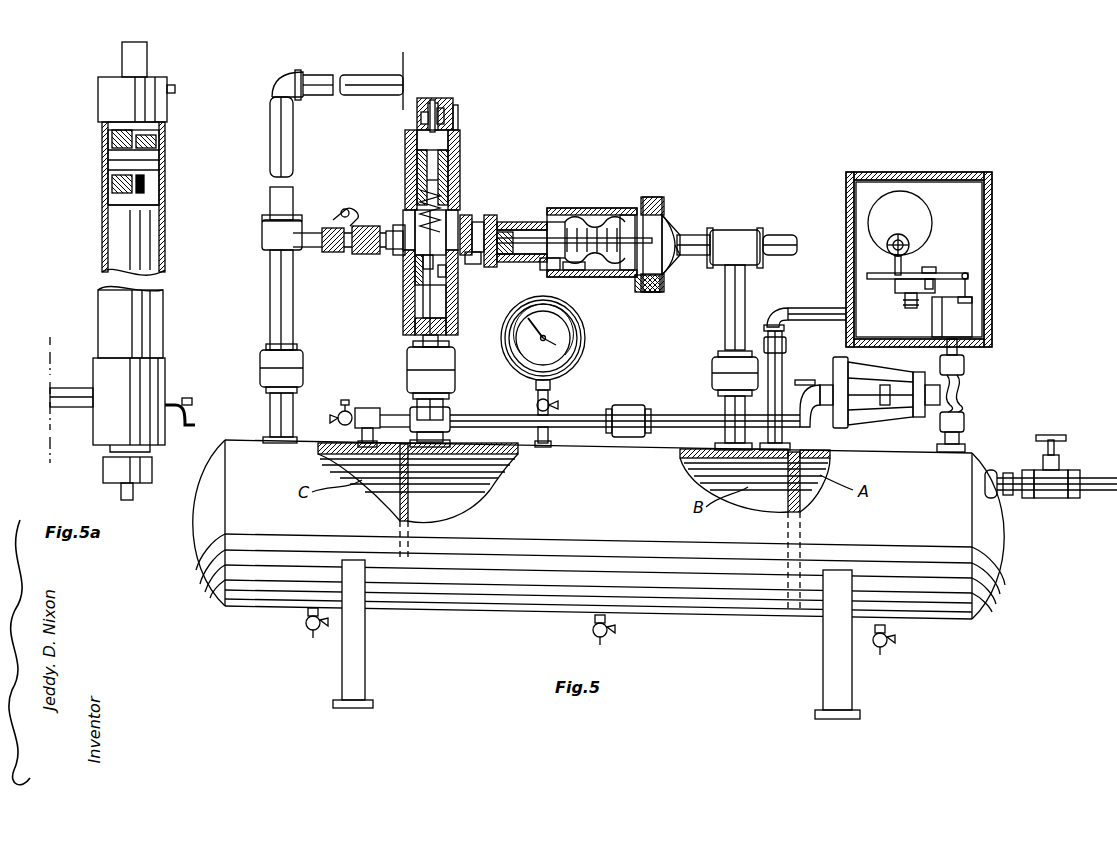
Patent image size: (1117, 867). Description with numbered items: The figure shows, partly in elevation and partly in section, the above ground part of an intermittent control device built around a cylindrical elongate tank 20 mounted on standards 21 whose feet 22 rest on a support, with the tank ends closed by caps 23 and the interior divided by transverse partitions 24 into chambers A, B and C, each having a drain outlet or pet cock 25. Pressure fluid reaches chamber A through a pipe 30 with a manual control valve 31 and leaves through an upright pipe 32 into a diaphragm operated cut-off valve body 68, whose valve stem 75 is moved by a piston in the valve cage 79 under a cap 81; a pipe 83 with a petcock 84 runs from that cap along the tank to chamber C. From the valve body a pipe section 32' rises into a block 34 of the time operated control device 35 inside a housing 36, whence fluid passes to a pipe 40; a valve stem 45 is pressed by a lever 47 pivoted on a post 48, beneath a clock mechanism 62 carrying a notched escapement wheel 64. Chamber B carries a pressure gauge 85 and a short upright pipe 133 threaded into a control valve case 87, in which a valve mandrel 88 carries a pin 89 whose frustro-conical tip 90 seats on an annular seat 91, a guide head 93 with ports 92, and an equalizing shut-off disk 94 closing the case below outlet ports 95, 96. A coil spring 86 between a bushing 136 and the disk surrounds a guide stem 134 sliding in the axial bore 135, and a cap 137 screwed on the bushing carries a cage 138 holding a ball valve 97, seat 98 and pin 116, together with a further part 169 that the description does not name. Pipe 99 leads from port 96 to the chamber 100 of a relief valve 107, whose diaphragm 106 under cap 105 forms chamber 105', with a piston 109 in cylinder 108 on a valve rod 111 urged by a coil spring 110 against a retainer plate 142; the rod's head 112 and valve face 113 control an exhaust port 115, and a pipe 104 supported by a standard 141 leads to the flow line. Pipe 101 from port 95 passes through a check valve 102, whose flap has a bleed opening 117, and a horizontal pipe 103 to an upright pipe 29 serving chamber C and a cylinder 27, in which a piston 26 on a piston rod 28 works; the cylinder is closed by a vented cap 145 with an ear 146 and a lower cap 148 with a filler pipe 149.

In FIG. 5, the tank 20 is at (485, 598).
In FIG. 5, the standards 21 is at (365, 648).
In FIG. 5, the feet 22 is at (373, 705).
In FIG. 5, the caps 23 is at (200, 562).
In FIG. 5, the partitions 24 is at (400, 510).
In FIG. 5, the drain outlet or pet cock 25 is at (305, 632).
In FIG. 5A, the piston 26 is at (120, 165).
In FIG. 5A, the cylinder 27 is at (162, 210).
In FIG. 5A, the piston rod 28 is at (121, 493).
In FIG. 5A, the upright pipe 29 is at (66, 388).
In FIG. 5, the upright pipe 29 is at (380, 78).
In FIG. 5, the pipe 30 is at (1102, 486).
In FIG. 5, the control valve 31 is at (1062, 455).
In FIG. 5, the upright pipe 32 is at (970, 428).
In FIG. 5, the pipe section 32' is at (985, 350).
In FIG. 5, the block 34 is at (960, 312).
In FIG. 5, the time operated mechanism or control device 35 is at (961, 220).
In FIG. 5, the housing 36 is at (846, 196).
In FIG. 5, the pipe 40 is at (815, 312).
In FIG. 5, the valve rod or stem 45 is at (935, 283).
In FIG. 5, the lever 47 is at (868, 279).
In FIG. 5, the post 48 is at (968, 285).
In FIG. 5, the time or clock mechanism 62 is at (922, 216).
In FIG. 5, the escapement wheel 64 is at (905, 238).
In FIG. 5, the cut-off valve body 68 is at (962, 392).
In FIG. 5, the valve stem 75 is at (885, 405).
In FIG. 5, the valve cage 79 is at (885, 368).
In FIG. 5, the cap or head 81 is at (826, 383).
In FIG. 5, the pipe 83 is at (683, 420).
In FIG. 5, the drain or petcock 84 is at (335, 410).
In FIG. 5, the pressure gauge 85 is at (582, 338).
In FIG. 5, the coil spring 86 is at (467, 215).
In FIG. 5, the control valve case 87 is at (403, 303).
In FIG. 5, the valve mandrel 88 is at (445, 270).
In FIG. 5, the stud or pin 89 is at (447, 290).
In FIG. 5, the frustro-conical tip 90 is at (415, 320).
In FIG. 5, the seat 91 is at (458, 315).
In FIG. 5, the ducts or ports 92 is at (415, 280).
In FIG. 5, the guide head or collar 93 is at (472, 262).
In FIG. 5, the shut-off disk 94 is at (395, 250).
In FIG. 5, the outlet port 95 is at (406, 232).
In FIG. 5, the outlet port 96 is at (480, 230).
In FIG. 5, the ball valve 97 is at (421, 118).
In FIG. 5, the seat 98 is at (440, 108).
In FIG. 5, the pipe 99 is at (497, 218).
In FIG. 5, the chamber 100 is at (530, 222).
In FIG. 5, the pipe 101 is at (396, 225).
In FIG. 5, the check valve 102 is at (350, 255).
In FIG. 5, the horizontal pipe 103 is at (300, 225).
In FIG. 5, the pipe 104 is at (712, 233).
In FIG. 5, the cap or head 105 is at (687, 222).
In FIG. 5, the chamber 105' is at (692, 269).
In FIG. 5, the diaphragm 106 is at (652, 197).
In FIG. 5, the relief valve 107 is at (596, 215).
In FIG. 5, the cylinder 108 is at (640, 292).
In FIG. 5, the piston 109 is at (628, 215).
In FIG. 5, the coil spring 110 is at (578, 215).
In FIG. 5, the valve rod 111 is at (572, 270).
In FIG. 5, the head or boss 112 is at (507, 254).
In FIG. 5, the valve face 113 is at (553, 222).
In FIG. 5, the exhaust port 115 is at (548, 270).
In FIG. 5, the pin 116 is at (457, 130).
In FIG. 5, the bleed opening 117 is at (335, 252).
In FIG. 5, the upright pipe 133 is at (408, 365).
In FIG. 5, the guide stem 134 is at (452, 180).
In FIG. 5, the axial bore 135 is at (405, 143).
In FIG. 5, the bushing 136 is at (417, 168).
In FIG. 5, the cap or head 137 is at (462, 140).
In FIG. 5, the cage 138 is at (424, 98).
In FIG. 5, the standard 141 is at (725, 332).
In FIG. 5, the retainer plate 142 is at (578, 210).
In FIG. 5A, the vented cap 145 is at (110, 100).
In FIG. 5A, the ear 146 is at (122, 58).
In FIG. 5A, the cap 148 is at (165, 375).
In FIG. 5A, the filler pipe 149 is at (195, 425).
In FIG. 5, the pin 169 is at (433, 100).